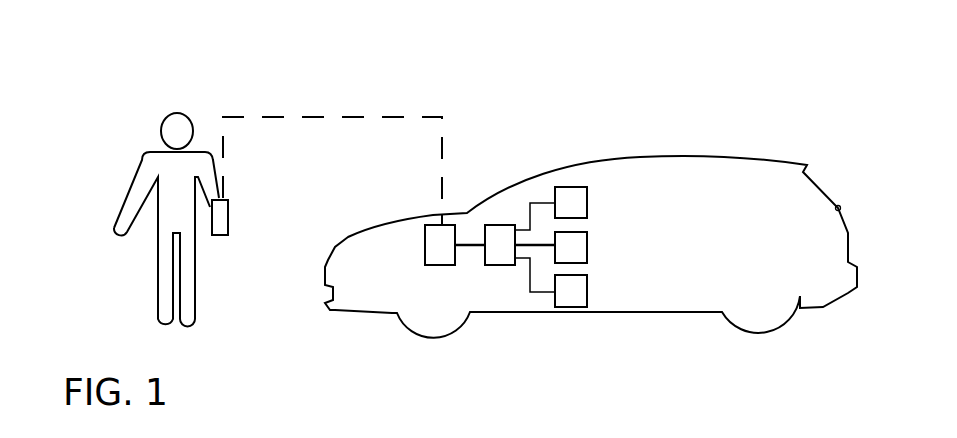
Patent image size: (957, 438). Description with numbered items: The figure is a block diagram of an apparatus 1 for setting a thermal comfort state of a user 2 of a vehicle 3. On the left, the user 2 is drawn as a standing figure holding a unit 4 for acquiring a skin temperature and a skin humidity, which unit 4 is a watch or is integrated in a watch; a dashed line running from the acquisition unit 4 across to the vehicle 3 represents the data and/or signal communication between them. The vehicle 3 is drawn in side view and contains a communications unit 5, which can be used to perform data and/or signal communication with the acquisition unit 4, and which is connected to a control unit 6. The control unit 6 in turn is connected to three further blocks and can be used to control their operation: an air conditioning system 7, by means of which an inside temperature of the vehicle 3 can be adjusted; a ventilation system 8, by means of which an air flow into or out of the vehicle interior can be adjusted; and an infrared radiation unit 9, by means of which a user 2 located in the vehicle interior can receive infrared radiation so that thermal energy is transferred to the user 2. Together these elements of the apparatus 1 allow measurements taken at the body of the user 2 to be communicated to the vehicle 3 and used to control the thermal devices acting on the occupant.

The apparatus 1 is at (510, 73).
The user 2 is at (179, 122).
The vehicle 3 is at (718, 170).
The unit for acquiring a skin temperature and a skin humidity 4 is at (226, 224).
The communications unit 5 is at (433, 254).
The control unit 6 is at (501, 254).
The air conditioning system 7 is at (578, 284).
The ventilation system 8 is at (578, 240).
The infrared radiation unit 9 is at (578, 201).